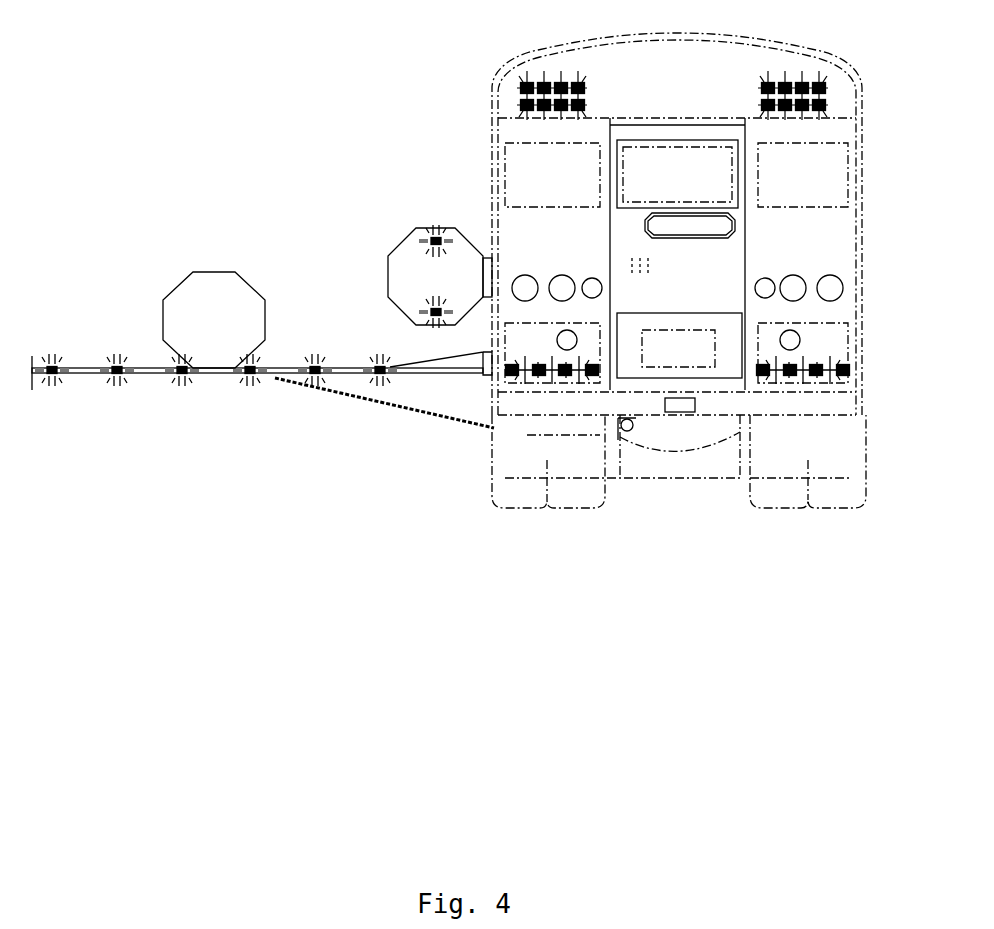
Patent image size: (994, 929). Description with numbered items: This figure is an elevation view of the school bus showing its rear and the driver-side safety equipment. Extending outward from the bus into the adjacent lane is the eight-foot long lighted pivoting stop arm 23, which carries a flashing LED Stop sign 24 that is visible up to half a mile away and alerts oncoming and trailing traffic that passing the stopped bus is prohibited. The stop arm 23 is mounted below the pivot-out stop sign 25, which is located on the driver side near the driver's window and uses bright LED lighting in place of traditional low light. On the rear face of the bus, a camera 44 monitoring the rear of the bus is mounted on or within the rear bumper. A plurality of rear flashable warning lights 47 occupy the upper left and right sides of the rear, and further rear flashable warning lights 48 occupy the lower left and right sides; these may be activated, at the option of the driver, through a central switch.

The lighted pivoting stop arm 23 is at (88, 378).
The flashing LED Stop sign 24 is at (211, 270).
The pivot-out stop sign 25 is at (397, 236).
The camera 44 is at (681, 418).
The rear flashable warning lights 47 is at (836, 74).
The rear flashable warning lights 48 is at (848, 380).